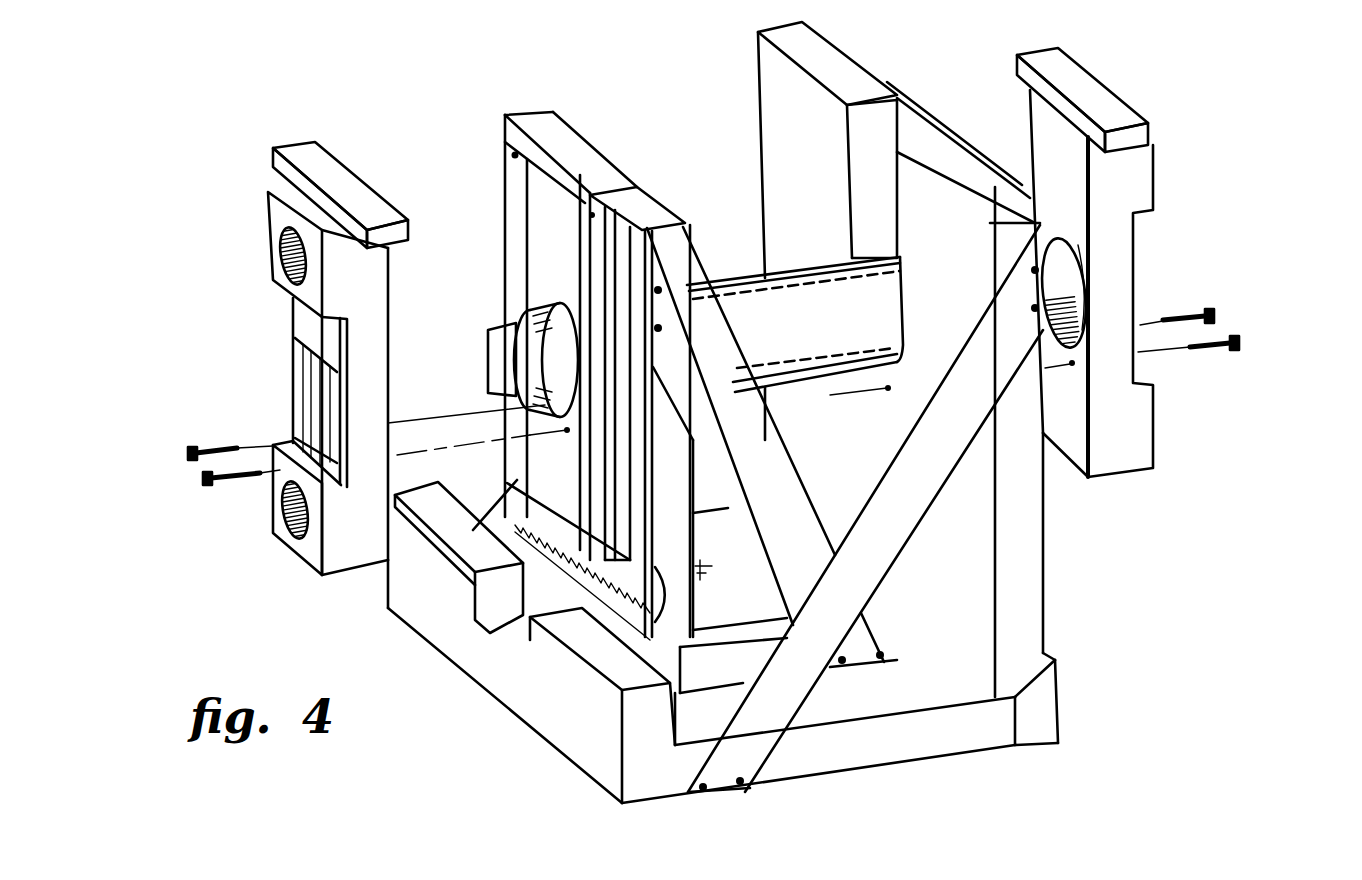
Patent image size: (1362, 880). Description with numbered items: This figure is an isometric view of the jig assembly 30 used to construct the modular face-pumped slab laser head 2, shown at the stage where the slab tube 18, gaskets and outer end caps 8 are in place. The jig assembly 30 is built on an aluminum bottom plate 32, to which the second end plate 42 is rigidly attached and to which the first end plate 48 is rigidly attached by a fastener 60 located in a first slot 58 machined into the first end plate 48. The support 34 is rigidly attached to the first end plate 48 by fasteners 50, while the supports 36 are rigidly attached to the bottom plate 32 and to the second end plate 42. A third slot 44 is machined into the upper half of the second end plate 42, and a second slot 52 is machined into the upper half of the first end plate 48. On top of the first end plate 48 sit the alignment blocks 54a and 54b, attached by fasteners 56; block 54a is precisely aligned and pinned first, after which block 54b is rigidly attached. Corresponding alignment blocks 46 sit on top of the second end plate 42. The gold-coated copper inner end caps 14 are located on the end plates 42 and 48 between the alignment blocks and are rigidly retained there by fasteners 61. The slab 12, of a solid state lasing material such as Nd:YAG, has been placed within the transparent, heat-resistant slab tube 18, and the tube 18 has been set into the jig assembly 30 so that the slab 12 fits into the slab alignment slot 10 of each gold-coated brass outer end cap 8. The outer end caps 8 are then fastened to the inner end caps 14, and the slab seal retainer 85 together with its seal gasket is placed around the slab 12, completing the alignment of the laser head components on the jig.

The modular face-pumped slab laser head 2 is at (1218, 156).
The outer end cap 8 is at (307, 157).
The slab alignment slot 10 is at (293, 382).
The slab 12 is at (497, 370).
The inner end cap 14 is at (536, 224).
The slab tube 18 is at (808, 333).
The jig assembly 30 is at (1092, 666).
The bottom plate 32 is at (563, 722).
The support 34 is at (744, 503).
The support 36 is at (712, 210).
The second end plate 42 is at (1025, 607).
The third slot 44 is at (873, 188).
The alignment blocks 46 is at (888, 78).
The first end plate 48 is at (545, 112).
The fasteners 50 is at (658, 290).
The second slot 52 is at (597, 180).
The alignment block 54a is at (523, 302).
The alignment block 54b is at (580, 232).
The fasteners 56 is at (515, 155).
The first slot 58 is at (703, 567).
The fastener 60 is at (705, 578).
The fasteners 61 is at (196, 455).
The slab seal retainer 85 is at (290, 420).